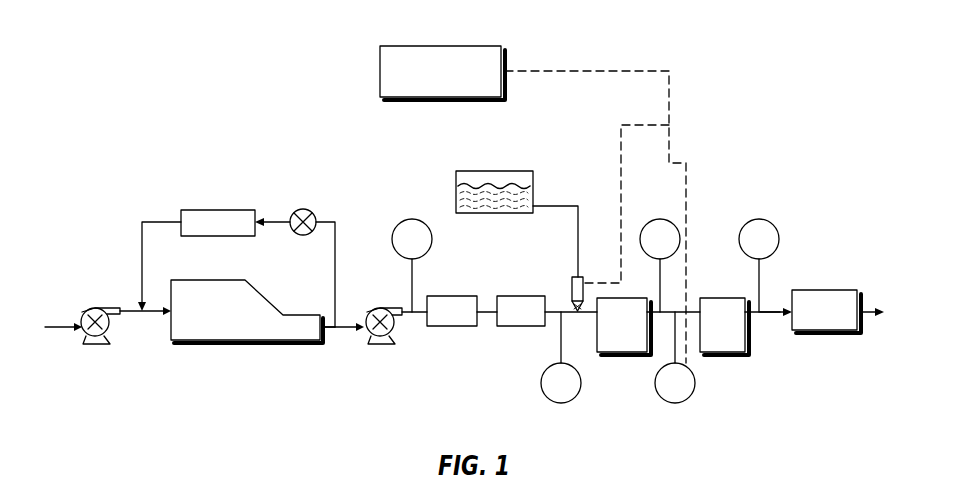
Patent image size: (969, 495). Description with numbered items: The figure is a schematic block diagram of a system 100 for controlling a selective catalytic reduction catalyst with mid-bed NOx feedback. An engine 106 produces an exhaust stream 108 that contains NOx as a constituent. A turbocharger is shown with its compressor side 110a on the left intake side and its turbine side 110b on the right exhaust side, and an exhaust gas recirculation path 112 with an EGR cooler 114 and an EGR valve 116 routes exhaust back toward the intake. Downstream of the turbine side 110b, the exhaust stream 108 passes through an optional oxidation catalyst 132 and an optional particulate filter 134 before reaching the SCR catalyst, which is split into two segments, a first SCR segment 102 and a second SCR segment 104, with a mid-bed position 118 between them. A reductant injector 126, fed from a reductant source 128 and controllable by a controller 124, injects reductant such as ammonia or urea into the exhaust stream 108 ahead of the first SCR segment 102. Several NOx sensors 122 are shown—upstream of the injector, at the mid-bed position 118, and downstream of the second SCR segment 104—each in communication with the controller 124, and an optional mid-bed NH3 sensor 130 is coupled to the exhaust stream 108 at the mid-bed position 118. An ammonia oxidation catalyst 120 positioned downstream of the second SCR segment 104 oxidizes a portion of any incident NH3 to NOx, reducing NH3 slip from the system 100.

The system 100 is at (172, 46).
The SCR 1 102 is at (618, 353).
The SCR 2 104 is at (714, 298).
The engine 106 is at (247, 311).
The exhaust stream 108 is at (334, 332).
The compressor side 110a is at (97, 308).
The turbine side 110b is at (384, 306).
The exhaust gas recirculation path 112 is at (165, 222).
The EGR cooler 114 is at (217, 210).
The EGR valve 116 is at (305, 209).
The mid-bed position 118 is at (661, 338).
The ammonia oxidation catalyst 120 is at (826, 290).
The NOx sensor 122 is at (407, 219).
The controller 124 is at (399, 46).
The reductant injector 126 is at (572, 278).
The reductant source 128 is at (503, 171).
The mid-bed NH3 sensor 130 is at (678, 404).
The oxidation catalyst 132 is at (454, 328).
The particulate filter 134 is at (524, 328).